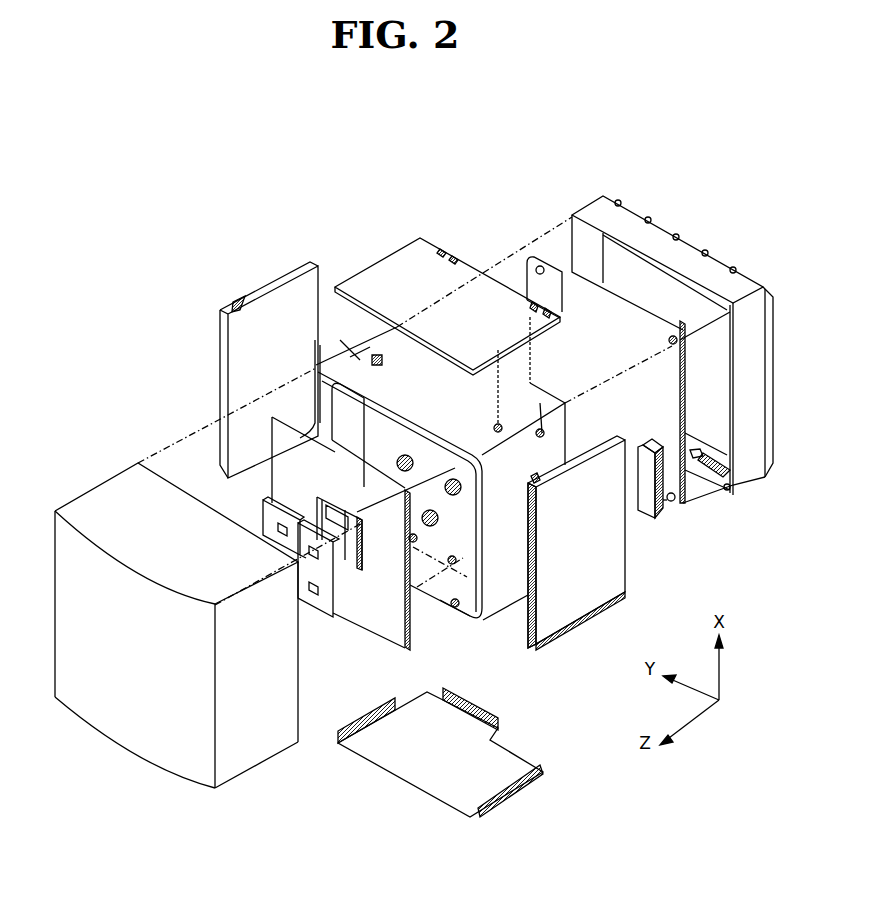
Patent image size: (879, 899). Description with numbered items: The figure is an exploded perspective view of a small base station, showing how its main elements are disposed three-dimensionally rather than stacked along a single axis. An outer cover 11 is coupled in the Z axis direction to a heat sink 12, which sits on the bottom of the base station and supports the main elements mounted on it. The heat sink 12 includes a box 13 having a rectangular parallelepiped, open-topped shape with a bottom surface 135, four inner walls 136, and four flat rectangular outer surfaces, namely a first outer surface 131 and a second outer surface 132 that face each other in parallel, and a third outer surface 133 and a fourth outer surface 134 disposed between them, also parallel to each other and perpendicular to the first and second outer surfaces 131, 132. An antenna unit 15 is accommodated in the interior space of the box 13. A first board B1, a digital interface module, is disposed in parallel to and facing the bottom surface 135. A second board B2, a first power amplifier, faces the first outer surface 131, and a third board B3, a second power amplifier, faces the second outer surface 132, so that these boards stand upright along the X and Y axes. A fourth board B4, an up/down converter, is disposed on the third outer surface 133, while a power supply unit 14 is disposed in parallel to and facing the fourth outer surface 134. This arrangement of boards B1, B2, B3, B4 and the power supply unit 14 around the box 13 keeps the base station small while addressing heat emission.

The outer cover 11 is at (155, 752).
The heat sink 12 is at (707, 273).
The box 13 is at (510, 610).
The first outer surface 131 is at (513, 553).
The second outer surface 132 is at (373, 353).
The third outer surface 133 is at (360, 370).
The fourth outer surface 134 is at (495, 612).
The bottom surface 135 is at (540, 403).
The inner walls 136 is at (347, 410).
The power supply unit 14 is at (443, 795).
The antenna unit 15 is at (345, 624).
The first board B1 is at (530, 290).
The second board B2 is at (570, 618).
The third board B3 is at (265, 290).
The fourth board B4 is at (418, 260).